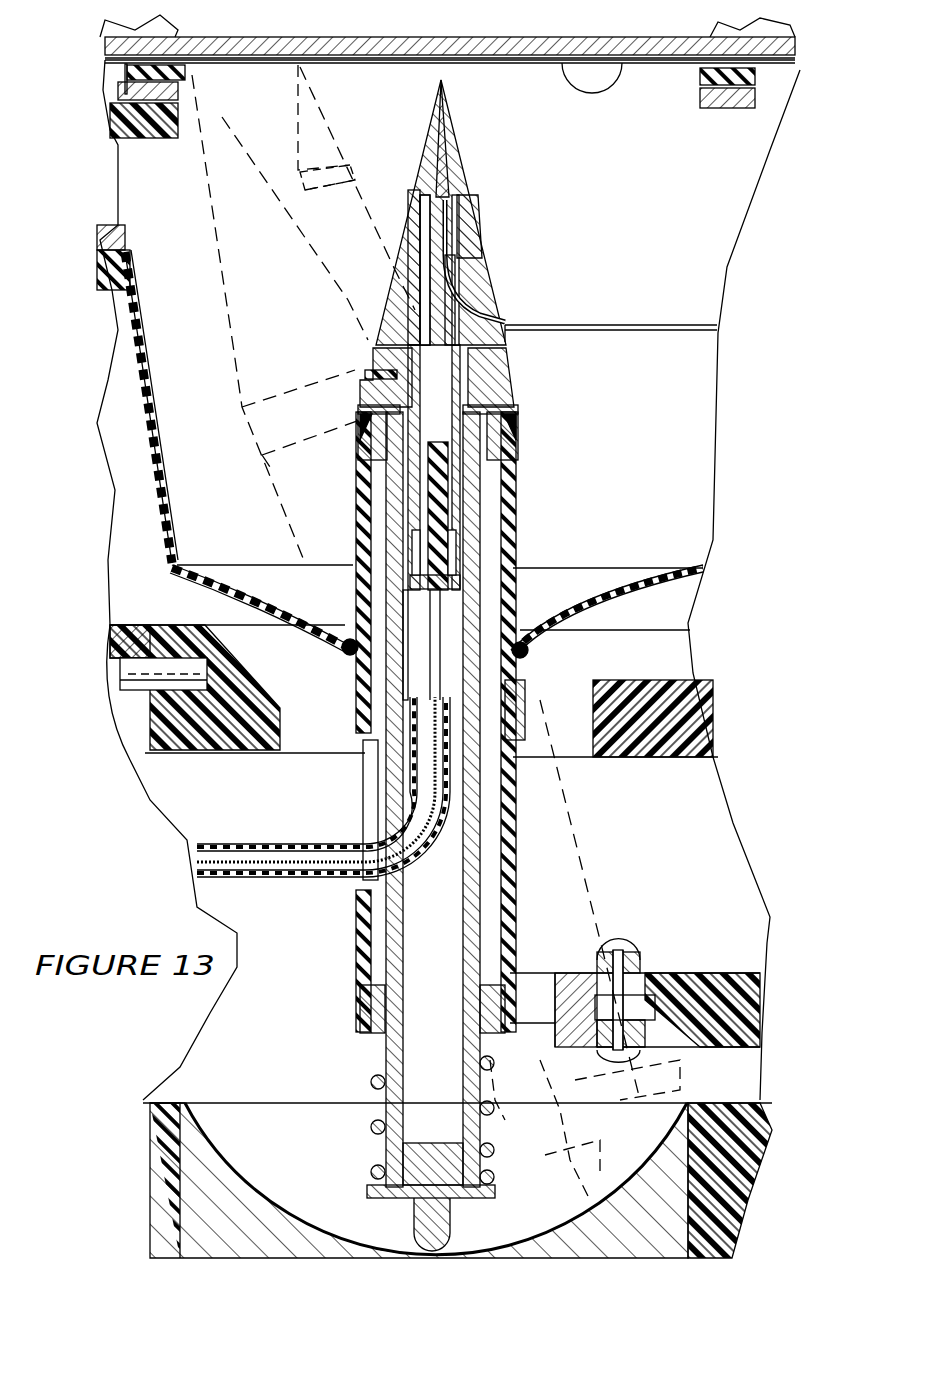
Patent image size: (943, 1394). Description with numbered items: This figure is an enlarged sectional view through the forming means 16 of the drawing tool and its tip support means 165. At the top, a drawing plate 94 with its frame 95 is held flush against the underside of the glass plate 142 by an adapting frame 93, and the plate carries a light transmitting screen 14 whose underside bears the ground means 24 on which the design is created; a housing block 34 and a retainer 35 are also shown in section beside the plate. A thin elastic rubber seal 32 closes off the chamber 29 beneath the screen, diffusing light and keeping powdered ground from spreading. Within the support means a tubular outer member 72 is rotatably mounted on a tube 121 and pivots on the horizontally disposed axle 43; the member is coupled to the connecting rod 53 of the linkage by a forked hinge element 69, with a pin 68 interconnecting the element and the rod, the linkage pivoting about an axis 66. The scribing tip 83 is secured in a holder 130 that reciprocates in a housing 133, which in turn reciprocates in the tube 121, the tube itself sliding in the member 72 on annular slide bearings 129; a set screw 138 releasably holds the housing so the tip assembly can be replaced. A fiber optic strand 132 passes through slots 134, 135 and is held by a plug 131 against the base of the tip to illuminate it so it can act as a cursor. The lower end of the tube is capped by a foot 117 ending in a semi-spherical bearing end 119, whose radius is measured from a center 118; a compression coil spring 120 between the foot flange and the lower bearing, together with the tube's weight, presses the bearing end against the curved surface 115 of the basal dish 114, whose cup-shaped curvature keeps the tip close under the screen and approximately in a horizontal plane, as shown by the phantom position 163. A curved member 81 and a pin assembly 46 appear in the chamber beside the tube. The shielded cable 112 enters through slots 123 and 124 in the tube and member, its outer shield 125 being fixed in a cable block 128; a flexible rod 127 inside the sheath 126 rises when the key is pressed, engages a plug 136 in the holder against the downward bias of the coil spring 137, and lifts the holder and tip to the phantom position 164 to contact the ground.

The glass plate 142 is at (235, 50).
The ground means 24 is at (622, 63).
The frame 95 is at (185, 70).
The adapting frame 93 is at (178, 92).
The drawing plate 94 is at (108, 73).
The housing block 34 is at (133, 140).
The light transmitting screen 14 is at (777, 78).
The retainer 35 is at (110, 290).
The elastic rubber seal 32 is at (140, 325).
The phantom line position 163 is at (270, 445).
The phantom-line position 164 is at (352, 168).
The holder 130 is at (455, 142).
The scribing tip 83 is at (443, 82).
The plug 131 is at (418, 200).
The housing 133 is at (475, 210).
The slot 134 is at (465, 275).
The slot 135 is at (478, 297).
The forming means 16 is at (520, 172).
The fiber optic strand 132 is at (598, 325).
The set screw 138 is at (370, 373).
The tube 121 is at (518, 372).
The cable block 128 is at (393, 610).
The plug 136 is at (430, 500).
The compression coil spring 137 is at (455, 548).
The flexible rod 127 is at (440, 615).
The annular slide bearing 129 is at (503, 421).
The tip support means 165 is at (540, 520).
The closed chamber 29 is at (682, 433).
The curved member 81 is at (528, 655).
The tubular outer member 72 is at (512, 705).
The axle 43 is at (612, 760).
The pin assembly 46 is at (165, 655).
The slot 123 is at (403, 812).
The sheath 126 is at (335, 880).
The outer shield 125 is at (280, 880).
The slot 124 is at (372, 772).
The shielded cable 112 is at (265, 830).
The connecting rod 53 is at (725, 973).
The forked hinge element 69 is at (572, 973).
The pin 68 is at (640, 945).
The axis 66 is at (525, 950).
The basal dish 114 is at (190, 1085).
The polished metal surface 115 is at (230, 1145).
The foot 117 is at (395, 1222).
The center of radius 118 is at (455, 1222).
The bearing end 119 is at (440, 1248).
The compression coil spring 120 is at (495, 1070).